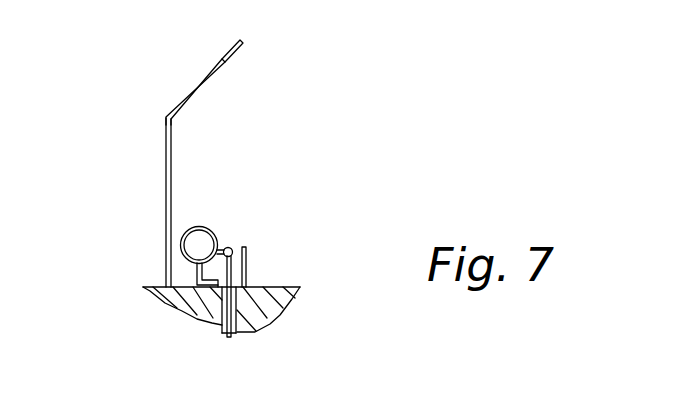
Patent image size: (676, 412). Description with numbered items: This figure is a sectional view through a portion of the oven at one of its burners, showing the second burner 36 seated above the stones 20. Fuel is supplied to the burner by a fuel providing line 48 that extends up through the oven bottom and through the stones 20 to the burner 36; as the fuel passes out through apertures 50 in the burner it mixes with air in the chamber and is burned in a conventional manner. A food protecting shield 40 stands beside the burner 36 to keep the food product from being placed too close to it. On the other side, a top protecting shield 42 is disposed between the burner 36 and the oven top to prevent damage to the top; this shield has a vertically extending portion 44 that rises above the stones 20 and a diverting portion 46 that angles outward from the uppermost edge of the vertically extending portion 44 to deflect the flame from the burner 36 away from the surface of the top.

The stones 20 is at (291, 299).
The second burner 36 is at (195, 226).
The food protecting shield 40 is at (247, 262).
The top protecting shield 42 is at (208, 72).
The vertically extending portion 44 is at (166, 182).
The diverting portion 46 is at (228, 63).
The fuel providing line 48 is at (228, 318).
The apertures 50 is at (207, 229).